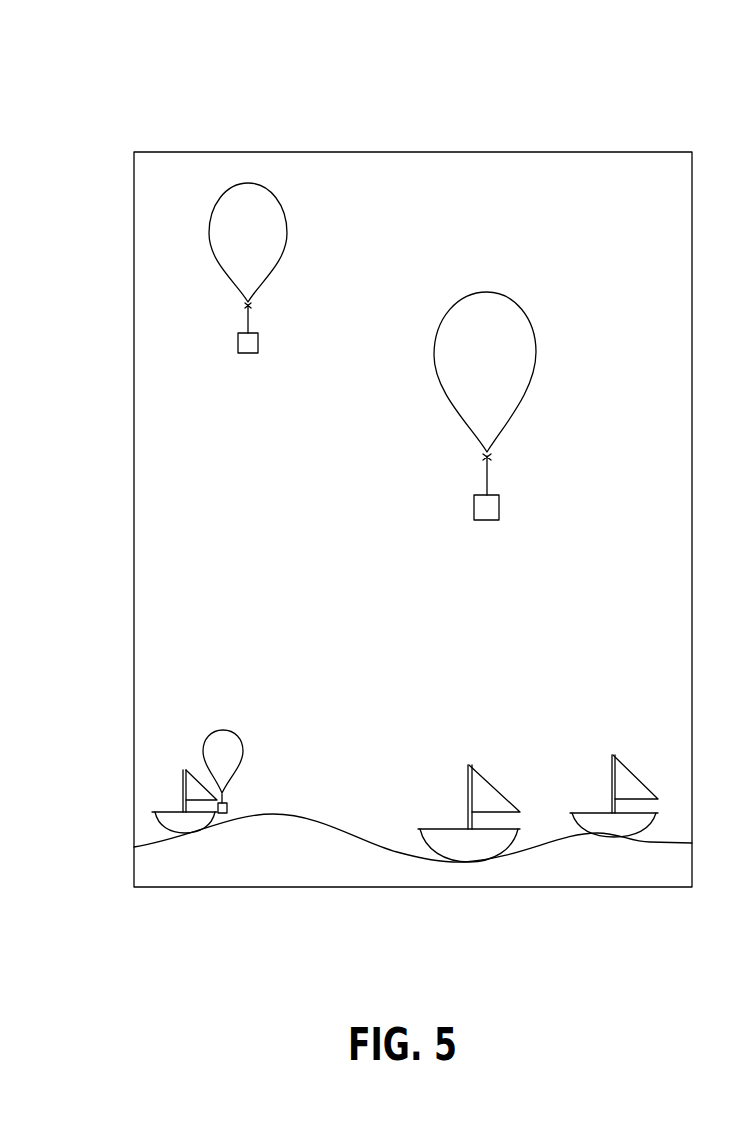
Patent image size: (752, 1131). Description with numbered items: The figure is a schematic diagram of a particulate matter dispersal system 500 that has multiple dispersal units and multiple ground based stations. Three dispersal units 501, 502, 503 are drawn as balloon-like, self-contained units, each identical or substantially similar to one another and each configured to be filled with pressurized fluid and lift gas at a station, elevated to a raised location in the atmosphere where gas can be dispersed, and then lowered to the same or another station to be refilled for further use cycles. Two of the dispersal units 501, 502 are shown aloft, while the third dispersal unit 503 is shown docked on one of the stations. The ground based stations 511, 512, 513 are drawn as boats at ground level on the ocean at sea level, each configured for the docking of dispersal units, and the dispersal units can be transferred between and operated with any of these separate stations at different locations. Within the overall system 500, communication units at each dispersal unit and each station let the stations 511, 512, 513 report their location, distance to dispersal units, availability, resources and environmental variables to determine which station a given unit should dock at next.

The particulate matter dispersal system 500 is at (148, 97).
The dispersal unit 501 is at (267, 233).
The dispersal unit 502 is at (536, 350).
The dispersal unit 503 is at (223, 738).
The ground based station 511 is at (612, 755).
The ground based station 512 is at (467, 763).
The ground based station 513 is at (184, 770).